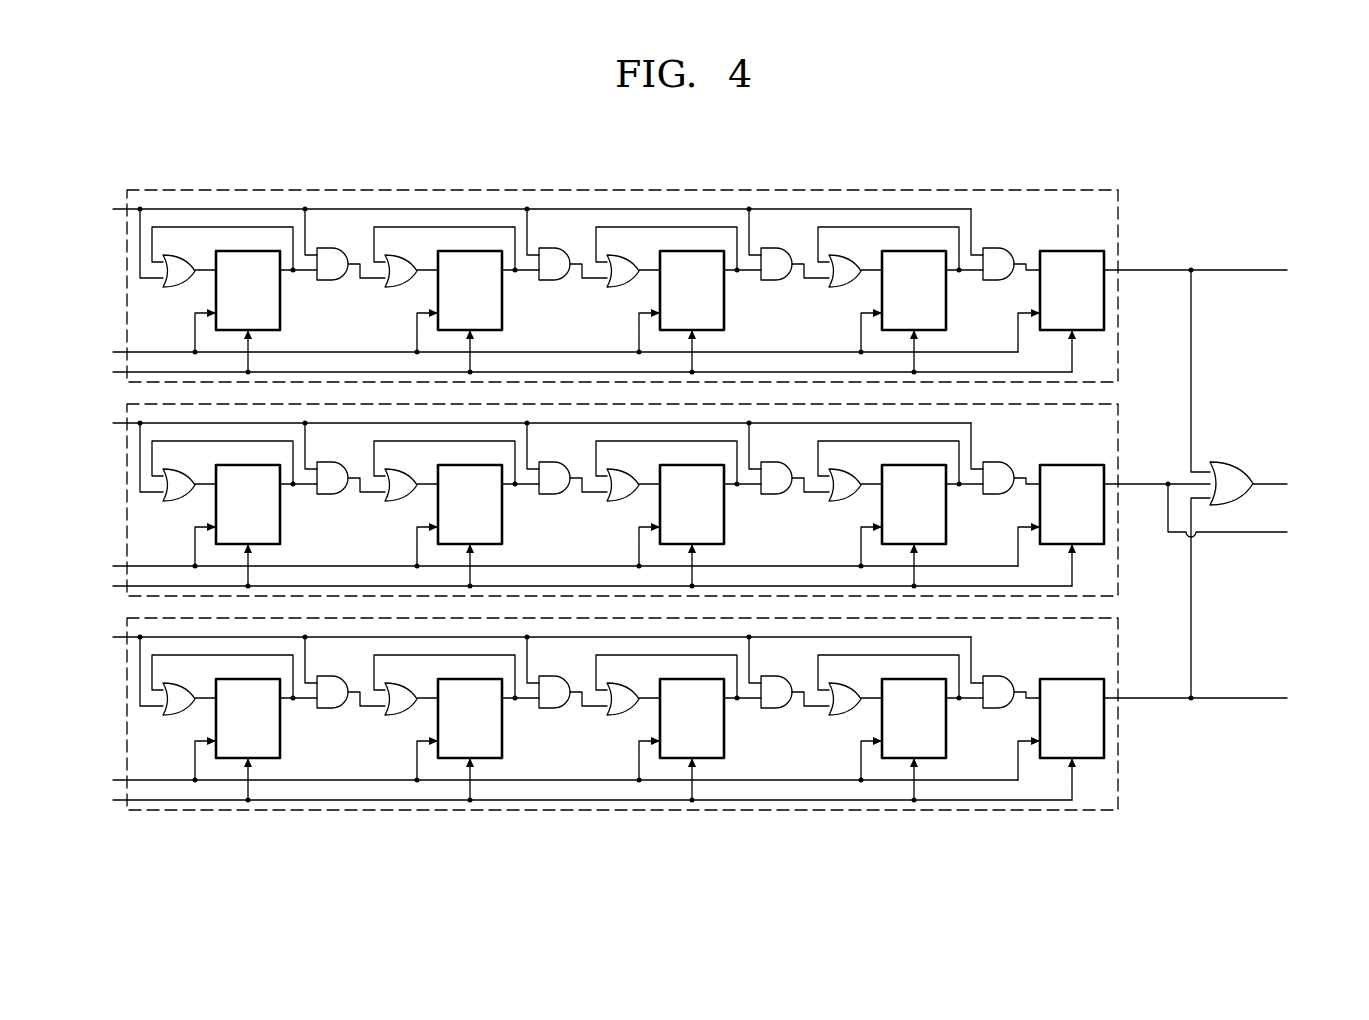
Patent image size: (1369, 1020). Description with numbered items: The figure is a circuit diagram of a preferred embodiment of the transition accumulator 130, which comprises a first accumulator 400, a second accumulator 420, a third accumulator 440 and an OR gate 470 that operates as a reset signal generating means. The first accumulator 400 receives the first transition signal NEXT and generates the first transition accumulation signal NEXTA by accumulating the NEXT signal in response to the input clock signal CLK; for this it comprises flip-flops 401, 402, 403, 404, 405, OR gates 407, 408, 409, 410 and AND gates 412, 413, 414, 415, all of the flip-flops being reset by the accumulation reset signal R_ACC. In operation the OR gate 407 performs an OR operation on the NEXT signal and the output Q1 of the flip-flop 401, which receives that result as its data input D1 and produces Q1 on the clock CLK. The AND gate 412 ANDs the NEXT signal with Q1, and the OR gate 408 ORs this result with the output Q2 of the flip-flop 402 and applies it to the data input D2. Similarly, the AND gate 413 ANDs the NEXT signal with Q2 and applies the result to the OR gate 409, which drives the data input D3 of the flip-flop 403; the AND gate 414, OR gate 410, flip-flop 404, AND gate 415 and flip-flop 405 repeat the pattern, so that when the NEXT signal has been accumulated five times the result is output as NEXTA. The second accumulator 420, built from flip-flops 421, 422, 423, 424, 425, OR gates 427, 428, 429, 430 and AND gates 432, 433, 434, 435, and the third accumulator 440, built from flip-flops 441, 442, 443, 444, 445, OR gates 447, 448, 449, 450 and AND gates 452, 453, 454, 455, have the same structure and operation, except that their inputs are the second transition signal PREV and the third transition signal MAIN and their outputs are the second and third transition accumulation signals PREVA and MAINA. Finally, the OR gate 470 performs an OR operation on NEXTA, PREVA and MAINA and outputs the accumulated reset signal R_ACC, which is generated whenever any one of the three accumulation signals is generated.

The transition accumulator 130 is at (1240, 188).
The first accumulator 400 is at (1118, 225).
The flip-flop 401 is at (277, 290).
The flip-flop 402 is at (499, 290).
The flip-flop 403 is at (721, 290).
The flip-flop 404 is at (943, 290).
The flip-flop 405 is at (1072, 272).
The OR gate 407 is at (189, 259).
The OR gate 408 is at (411, 259).
The OR gate 409 is at (633, 259).
The OR gate 410 is at (855, 259).
The AND gate 412 is at (351, 248).
The AND gate 413 is at (573, 248).
The AND gate 414 is at (795, 248).
The AND gate 415 is at (1011, 248).
The second accumulator 420 is at (613, 500).
The flip-flop 421 is at (277, 504).
The flip-flop 422 is at (499, 504).
The flip-flop 423 is at (721, 504).
The flip-flop 424 is at (943, 504).
The flip-flop 425 is at (1072, 486).
The OR gate 427 is at (189, 473).
The OR gate 428 is at (411, 473).
The OR gate 429 is at (633, 473).
The OR gate 430 is at (855, 473).
The AND gate 432 is at (351, 462).
The AND gate 433 is at (573, 462).
The AND gate 434 is at (795, 462).
The AND gate 435 is at (1011, 462).
The third accumulator 440 is at (613, 714).
The flip-flop 441 is at (277, 718).
The flip-flop 442 is at (499, 718).
The flip-flop 443 is at (721, 718).
The flip-flop 444 is at (943, 718).
The flip-flop 445 is at (1072, 700).
The OR gate 447 is at (189, 687).
The OR gate 448 is at (411, 687).
The OR gate 449 is at (633, 687).
The OR gate 450 is at (855, 687).
The AND gate 452 is at (351, 676).
The AND gate 453 is at (573, 676).
The AND gate 454 is at (795, 676).
The AND gate 455 is at (1011, 676).
The OR gate 470 is at (1232, 462).